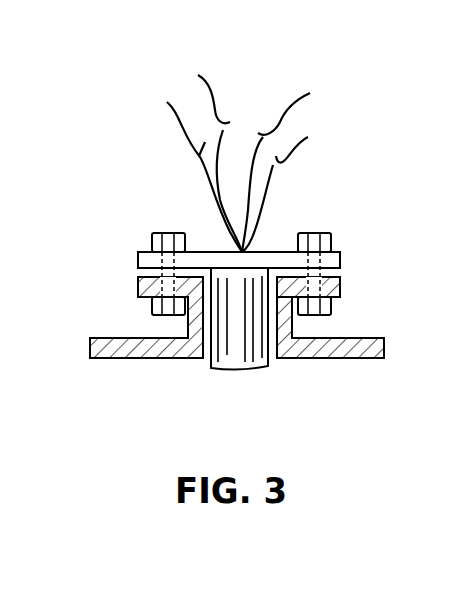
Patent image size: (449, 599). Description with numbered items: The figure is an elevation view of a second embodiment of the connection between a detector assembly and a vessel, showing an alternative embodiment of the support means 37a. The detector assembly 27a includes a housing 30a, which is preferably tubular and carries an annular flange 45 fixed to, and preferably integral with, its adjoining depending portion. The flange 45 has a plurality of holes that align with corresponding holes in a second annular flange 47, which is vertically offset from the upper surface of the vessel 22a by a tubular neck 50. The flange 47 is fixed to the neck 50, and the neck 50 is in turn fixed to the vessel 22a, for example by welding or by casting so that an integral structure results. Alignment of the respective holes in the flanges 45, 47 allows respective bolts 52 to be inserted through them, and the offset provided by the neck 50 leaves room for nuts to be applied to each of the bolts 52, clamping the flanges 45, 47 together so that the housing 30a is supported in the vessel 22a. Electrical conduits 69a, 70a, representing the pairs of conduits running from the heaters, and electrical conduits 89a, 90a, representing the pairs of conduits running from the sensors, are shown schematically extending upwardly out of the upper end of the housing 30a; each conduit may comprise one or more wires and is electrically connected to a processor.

The vessel 22a is at (112, 338).
The detector assembly 27a is at (333, 169).
The housing 30a is at (207, 371).
The support means 37a is at (180, 214).
The annular flange 45 is at (138, 260).
The annular flange 47 is at (342, 288).
The tubular neck 50 is at (292, 337).
The bolts 52 is at (318, 234).
The electrical conduit 69a is at (184, 169).
The electrical conduit 70a is at (202, 151).
The electrical conduit 89a is at (294, 166).
The electrical conduit 90a is at (294, 188).